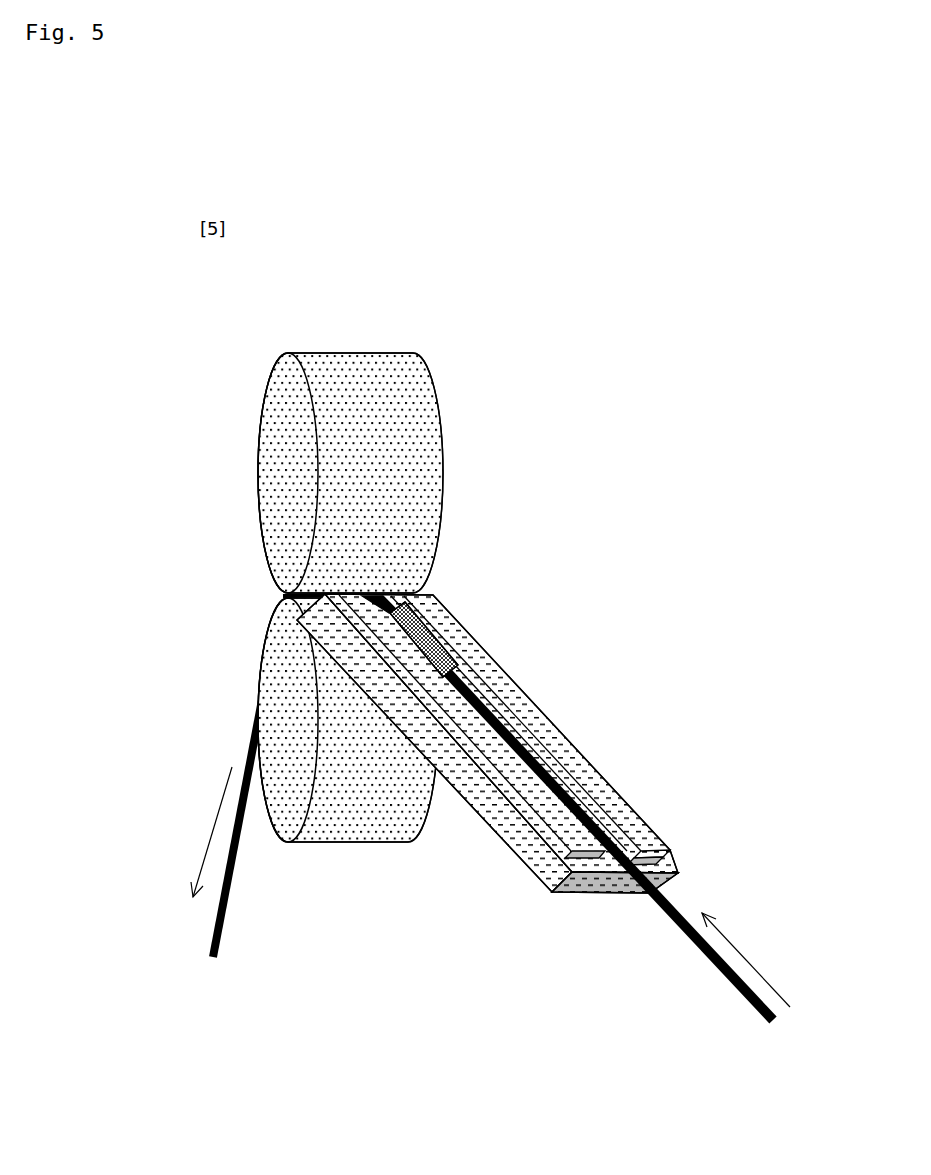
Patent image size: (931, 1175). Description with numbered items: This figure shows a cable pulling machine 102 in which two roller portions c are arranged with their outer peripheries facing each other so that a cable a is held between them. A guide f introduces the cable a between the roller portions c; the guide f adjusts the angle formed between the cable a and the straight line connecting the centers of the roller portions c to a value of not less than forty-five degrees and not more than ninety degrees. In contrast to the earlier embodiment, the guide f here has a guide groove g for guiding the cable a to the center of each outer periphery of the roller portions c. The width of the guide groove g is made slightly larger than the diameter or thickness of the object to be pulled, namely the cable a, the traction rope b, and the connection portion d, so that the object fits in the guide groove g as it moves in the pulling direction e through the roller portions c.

The cable pulling machine 102 is at (335, 717).
The cable a is at (687, 938).
The traction rope b is at (210, 950).
The roller portion c is at (270, 612).
The connection portion d is at (445, 625).
The pulling direction e is at (217, 826).
The guide f is at (663, 837).
The guide groove g is at (577, 797).